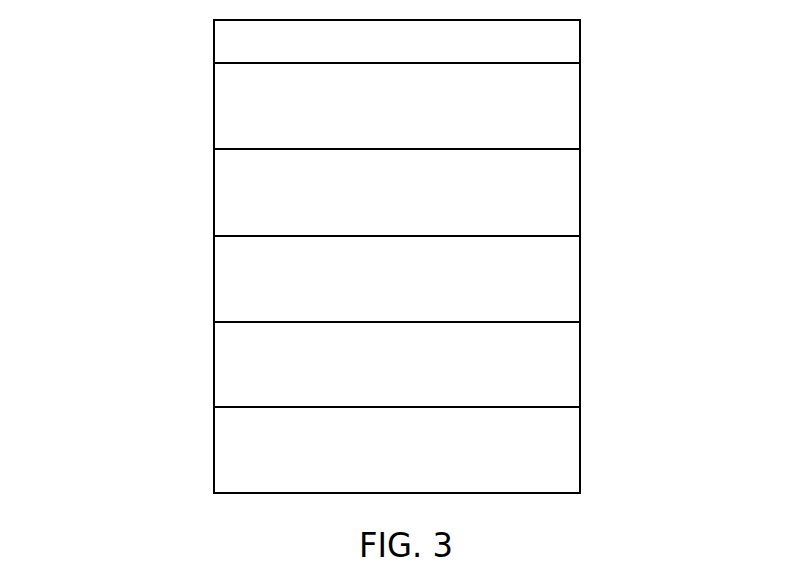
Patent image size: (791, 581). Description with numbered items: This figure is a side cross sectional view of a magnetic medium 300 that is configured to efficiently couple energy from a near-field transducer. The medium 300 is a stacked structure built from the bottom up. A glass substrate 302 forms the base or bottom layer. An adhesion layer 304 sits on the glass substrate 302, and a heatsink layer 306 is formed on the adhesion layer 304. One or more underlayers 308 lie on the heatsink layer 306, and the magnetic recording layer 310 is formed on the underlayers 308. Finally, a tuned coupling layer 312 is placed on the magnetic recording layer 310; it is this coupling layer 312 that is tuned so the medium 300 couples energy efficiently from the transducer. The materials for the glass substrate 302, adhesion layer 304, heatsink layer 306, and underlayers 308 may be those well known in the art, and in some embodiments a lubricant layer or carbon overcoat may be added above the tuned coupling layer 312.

The magnetic medium 300 is at (108, 165).
The glass substrate 302 is at (581, 450).
The adhesion layer 304 is at (581, 364).
The heatsink layer 306 is at (581, 278).
The underlayers 308 is at (581, 192).
The magnetic recording layer 310 is at (581, 105).
The tuned coupling layer 312 is at (581, 42).